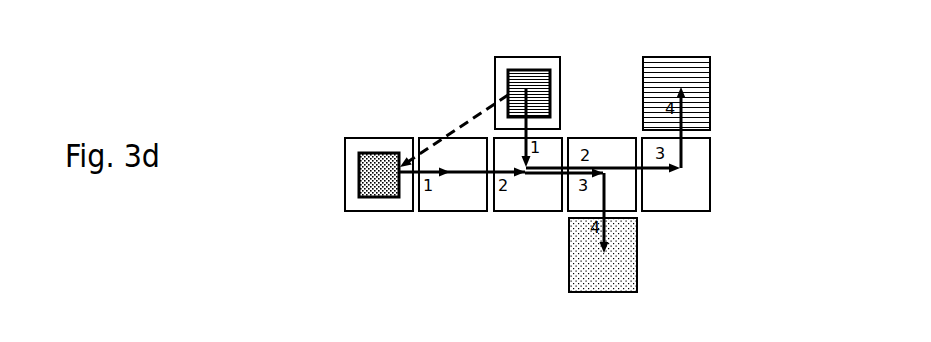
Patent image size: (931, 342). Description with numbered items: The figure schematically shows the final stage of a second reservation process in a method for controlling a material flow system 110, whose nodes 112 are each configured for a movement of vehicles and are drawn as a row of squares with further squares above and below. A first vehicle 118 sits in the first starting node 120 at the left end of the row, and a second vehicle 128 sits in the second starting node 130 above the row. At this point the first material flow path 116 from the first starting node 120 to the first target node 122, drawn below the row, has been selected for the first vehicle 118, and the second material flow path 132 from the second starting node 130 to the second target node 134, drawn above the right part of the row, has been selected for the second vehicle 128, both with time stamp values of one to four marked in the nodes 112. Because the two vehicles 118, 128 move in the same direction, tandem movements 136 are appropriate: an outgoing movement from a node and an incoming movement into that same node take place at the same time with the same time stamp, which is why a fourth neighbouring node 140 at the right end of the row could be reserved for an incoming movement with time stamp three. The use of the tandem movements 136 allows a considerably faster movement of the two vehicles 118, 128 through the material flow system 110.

The material flow system 110 is at (733, 99).
The nodes 112 is at (393, 207).
The first material flow path 116 is at (477, 177).
The first vehicle 118 is at (358, 185).
The first starting node 120 is at (367, 200).
The first target node 122 is at (625, 262).
The second vehicle 128 is at (540, 83).
The second starting node 130 is at (503, 77).
The second material flow path 132 is at (625, 138).
The second target node 134 is at (693, 115).
The tandem movement 136 is at (555, 174).
The fourth neighbouring node 140 is at (695, 187).